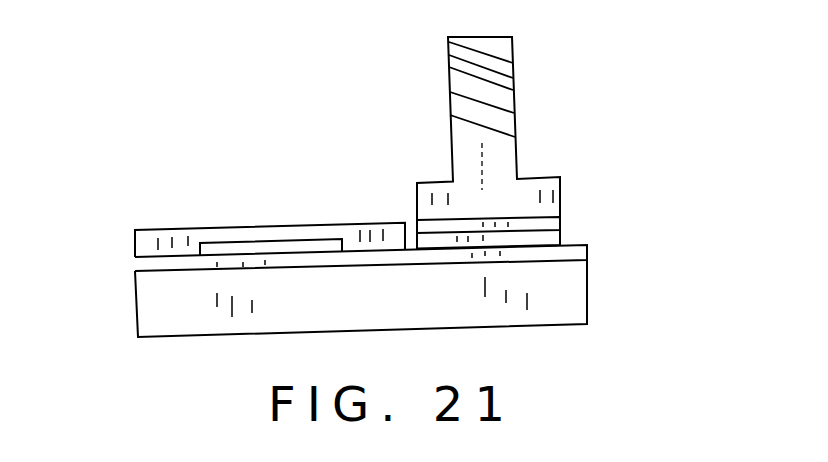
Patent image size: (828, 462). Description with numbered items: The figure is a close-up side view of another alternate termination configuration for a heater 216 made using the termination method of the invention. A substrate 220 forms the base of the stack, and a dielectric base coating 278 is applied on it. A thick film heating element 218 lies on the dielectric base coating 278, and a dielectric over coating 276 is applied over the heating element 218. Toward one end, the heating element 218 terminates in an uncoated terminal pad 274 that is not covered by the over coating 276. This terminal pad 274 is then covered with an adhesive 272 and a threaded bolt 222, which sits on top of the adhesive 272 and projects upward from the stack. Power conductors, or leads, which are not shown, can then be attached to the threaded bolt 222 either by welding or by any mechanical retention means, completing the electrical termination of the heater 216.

The heater 216 is at (108, 300).
The thick film heating element 218 is at (248, 248).
The substrate 220 is at (568, 293).
The threaded bolt 222 is at (550, 190).
The adhesive 272 is at (550, 222).
The uncoated terminal pad 274 is at (550, 237).
The dielectric over coating 276 is at (158, 243).
The dielectric base coating 278 is at (573, 250).